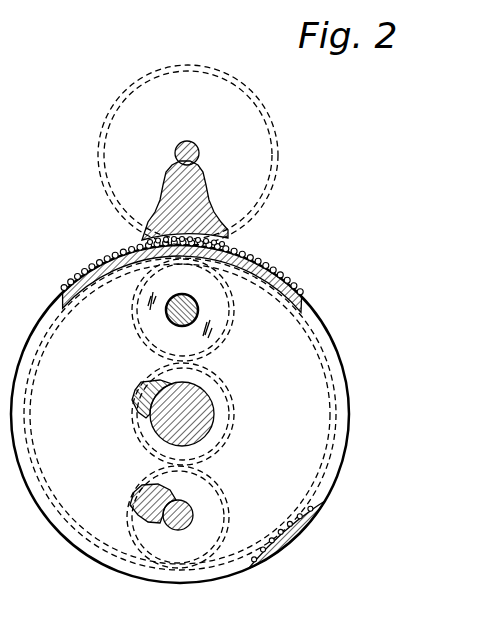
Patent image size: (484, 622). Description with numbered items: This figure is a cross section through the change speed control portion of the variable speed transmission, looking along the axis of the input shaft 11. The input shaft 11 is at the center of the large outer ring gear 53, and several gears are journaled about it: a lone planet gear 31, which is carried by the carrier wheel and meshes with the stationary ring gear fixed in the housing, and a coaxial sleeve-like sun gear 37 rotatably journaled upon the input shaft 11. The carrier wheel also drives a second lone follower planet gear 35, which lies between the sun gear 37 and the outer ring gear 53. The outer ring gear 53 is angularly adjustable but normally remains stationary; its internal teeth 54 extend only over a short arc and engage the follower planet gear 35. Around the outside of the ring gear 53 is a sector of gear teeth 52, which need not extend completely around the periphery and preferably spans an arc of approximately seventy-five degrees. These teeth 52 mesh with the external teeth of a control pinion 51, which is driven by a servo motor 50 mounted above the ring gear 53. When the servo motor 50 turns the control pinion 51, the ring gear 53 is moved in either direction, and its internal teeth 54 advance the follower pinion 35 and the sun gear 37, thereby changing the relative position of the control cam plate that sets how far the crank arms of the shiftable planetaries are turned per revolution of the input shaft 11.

The input shaft 11 is at (196, 389).
The lone planet gear 31 is at (192, 290).
The follower planet gear 35 is at (133, 495).
The sleeve-like sun gear 37 is at (133, 399).
The servo motor 50 is at (198, 148).
The control pinion 51 is at (172, 110).
The sector of gear teeth 52 is at (283, 270).
The outer ring gear 53 is at (325, 332).
The internal teeth 54 is at (291, 513).